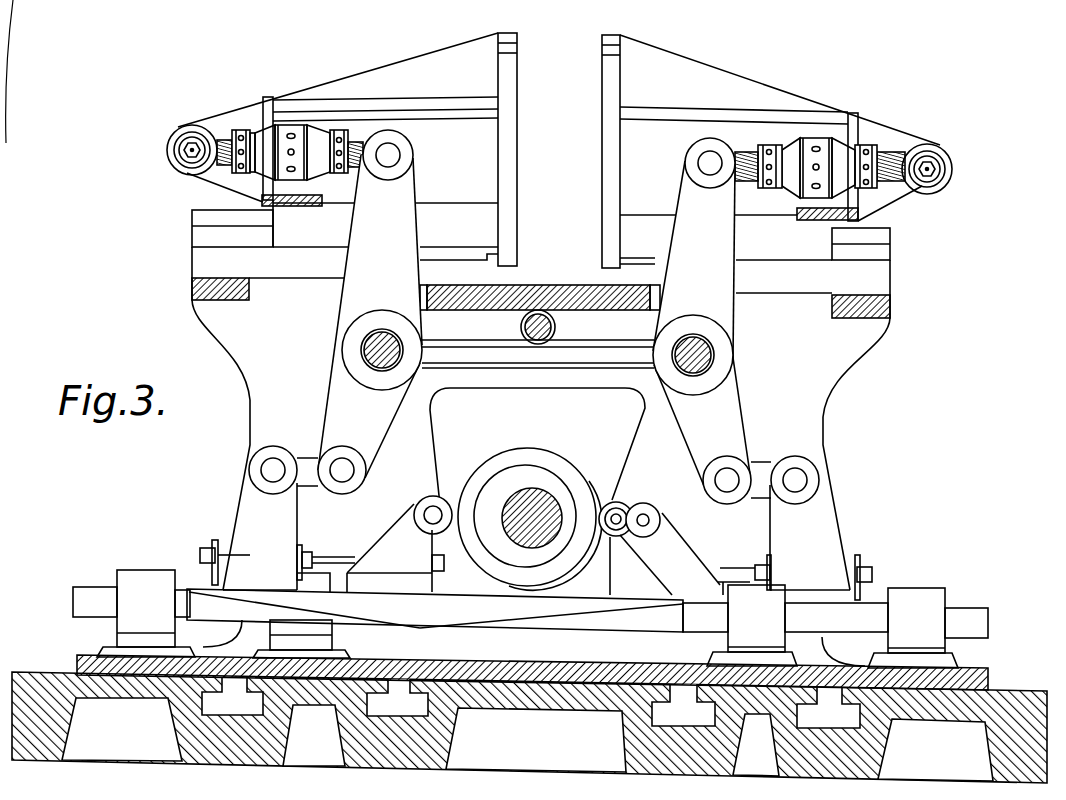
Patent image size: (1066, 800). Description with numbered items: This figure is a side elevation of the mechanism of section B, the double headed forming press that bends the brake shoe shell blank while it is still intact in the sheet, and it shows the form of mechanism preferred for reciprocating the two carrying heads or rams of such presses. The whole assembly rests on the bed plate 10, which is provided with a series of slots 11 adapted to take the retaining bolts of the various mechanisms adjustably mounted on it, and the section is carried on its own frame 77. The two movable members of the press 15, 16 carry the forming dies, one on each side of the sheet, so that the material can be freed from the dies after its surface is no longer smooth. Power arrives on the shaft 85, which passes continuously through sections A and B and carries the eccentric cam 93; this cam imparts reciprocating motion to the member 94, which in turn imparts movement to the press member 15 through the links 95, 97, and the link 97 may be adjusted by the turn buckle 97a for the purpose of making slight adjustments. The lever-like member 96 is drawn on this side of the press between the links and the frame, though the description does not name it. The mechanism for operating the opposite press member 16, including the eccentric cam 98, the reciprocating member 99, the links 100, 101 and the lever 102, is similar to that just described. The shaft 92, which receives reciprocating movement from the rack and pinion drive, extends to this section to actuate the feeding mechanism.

The bed plate 10 is at (28, 685).
The slots 11 is at (215, 700).
The movable member of the press 15 is at (402, 67).
The movable member of the press 16 is at (697, 78).
The frame 77 is at (255, 372).
The shaft 85 is at (522, 500).
The shaft 92 is at (540, 312).
The eccentric cam 93 is at (550, 458).
The reciprocating member 94 is at (615, 618).
The link 95 is at (320, 493).
The lever 96 is at (343, 412).
The link 97 is at (380, 128).
The turn buckle 97a is at (268, 145).
The eccentric cam 98 is at (605, 492).
The reciprocating member 99 is at (683, 557).
The link 100 is at (812, 425).
The link 101 is at (768, 152).
The lever 102 is at (705, 285).